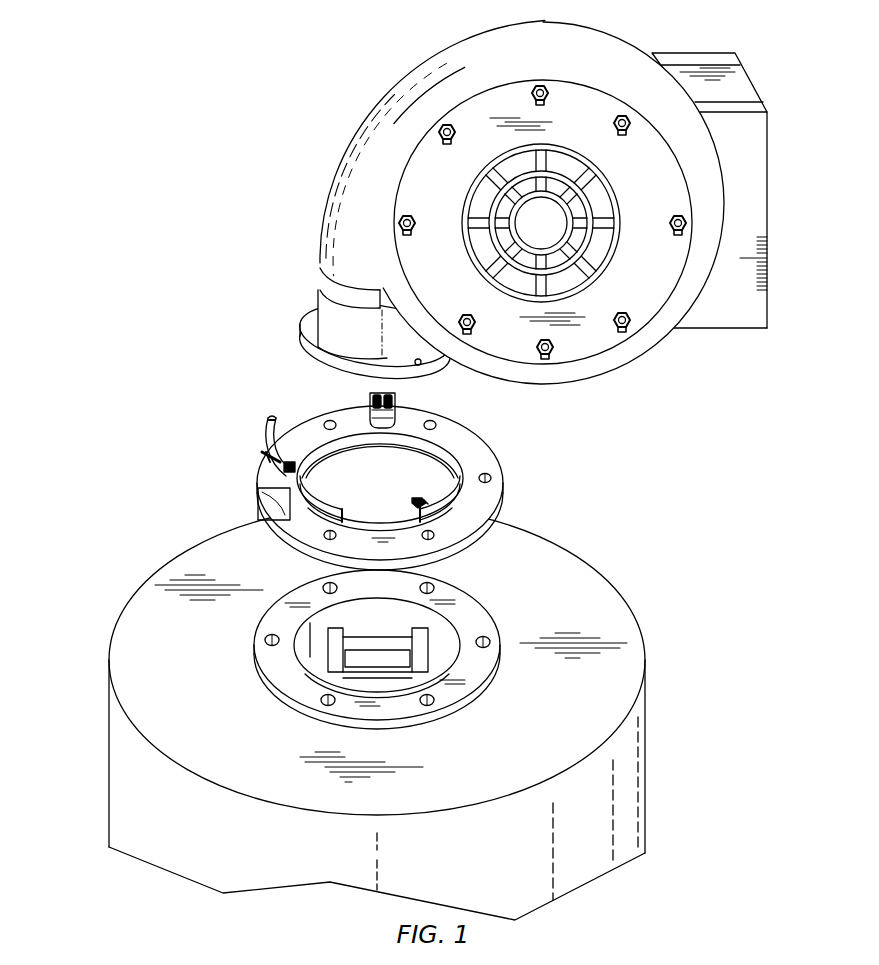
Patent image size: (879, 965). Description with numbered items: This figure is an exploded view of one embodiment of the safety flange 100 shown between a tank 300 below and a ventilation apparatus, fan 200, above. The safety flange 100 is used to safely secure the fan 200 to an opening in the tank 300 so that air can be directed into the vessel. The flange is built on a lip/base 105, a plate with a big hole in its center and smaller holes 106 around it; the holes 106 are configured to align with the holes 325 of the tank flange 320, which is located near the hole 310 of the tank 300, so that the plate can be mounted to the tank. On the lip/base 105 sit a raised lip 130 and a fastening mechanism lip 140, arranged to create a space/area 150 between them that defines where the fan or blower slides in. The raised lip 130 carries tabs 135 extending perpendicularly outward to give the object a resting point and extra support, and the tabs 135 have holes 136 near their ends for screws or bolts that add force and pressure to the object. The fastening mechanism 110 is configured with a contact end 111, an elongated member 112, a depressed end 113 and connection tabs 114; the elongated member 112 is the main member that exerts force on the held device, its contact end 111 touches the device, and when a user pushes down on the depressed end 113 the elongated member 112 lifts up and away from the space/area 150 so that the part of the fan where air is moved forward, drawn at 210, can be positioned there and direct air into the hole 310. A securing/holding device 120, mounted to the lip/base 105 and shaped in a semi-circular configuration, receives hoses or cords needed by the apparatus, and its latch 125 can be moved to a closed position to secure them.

The safety flange 100 is at (290, 476).
The lip/base 105 is at (260, 493).
The holes 106 is at (490, 474).
The fastening mechanism 110 is at (257, 444).
The contact end 111 is at (272, 425).
The elongated member 112 is at (260, 457).
The depressed end 113 is at (267, 488).
The connection tabs 114 is at (267, 520).
The securing/holding device 120 is at (368, 398).
The latch 125 is at (396, 393).
The raised lip 130 is at (462, 497).
The tabs 135 is at (413, 507).
The holes 136 is at (410, 502).
The fastening mechanism lip 140 is at (327, 508).
The space/area 150 is at (337, 462).
The fan 200 is at (543, 203).
The blower outlet flange 210 is at (293, 339).
The tank 300 is at (648, 759).
The hole 310 is at (398, 620).
The tank flange 320 is at (399, 654).
The holes 325 is at (435, 703).